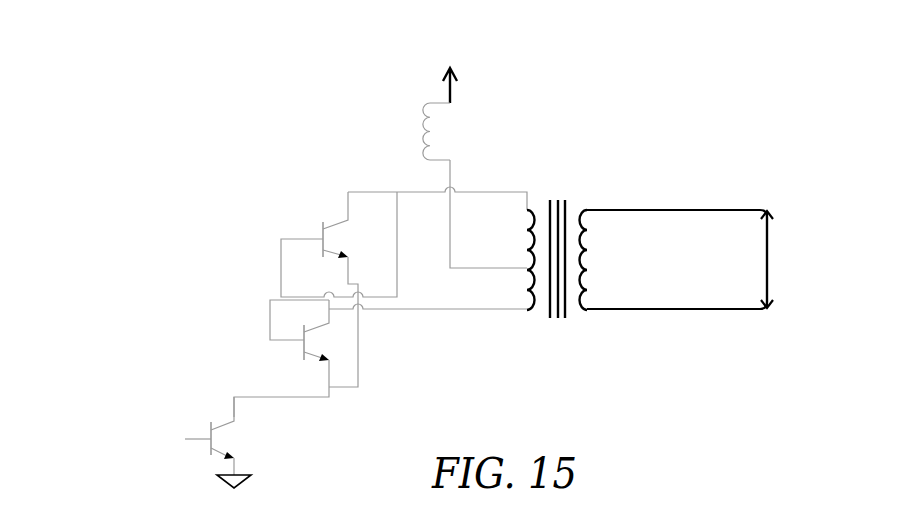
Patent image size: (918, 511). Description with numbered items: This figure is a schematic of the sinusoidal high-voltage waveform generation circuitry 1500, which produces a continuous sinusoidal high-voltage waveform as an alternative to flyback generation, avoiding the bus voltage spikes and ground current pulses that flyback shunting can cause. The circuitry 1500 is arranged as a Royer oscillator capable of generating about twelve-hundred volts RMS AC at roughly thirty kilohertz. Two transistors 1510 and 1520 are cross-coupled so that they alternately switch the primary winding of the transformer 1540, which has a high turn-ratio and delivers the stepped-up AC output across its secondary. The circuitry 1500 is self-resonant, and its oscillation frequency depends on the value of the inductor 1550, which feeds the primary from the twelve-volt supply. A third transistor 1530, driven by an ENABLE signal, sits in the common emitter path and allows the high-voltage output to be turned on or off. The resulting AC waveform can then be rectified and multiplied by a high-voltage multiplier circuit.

The sinusoidal high-voltage waveform generation circuitry 1500 is at (105, 47).
The transistor 1510 is at (334, 215).
The transistor 1520 is at (285, 352).
The transistor 1530 is at (253, 432).
The transformer 1540 is at (553, 193).
The inductor 1550 is at (462, 140).